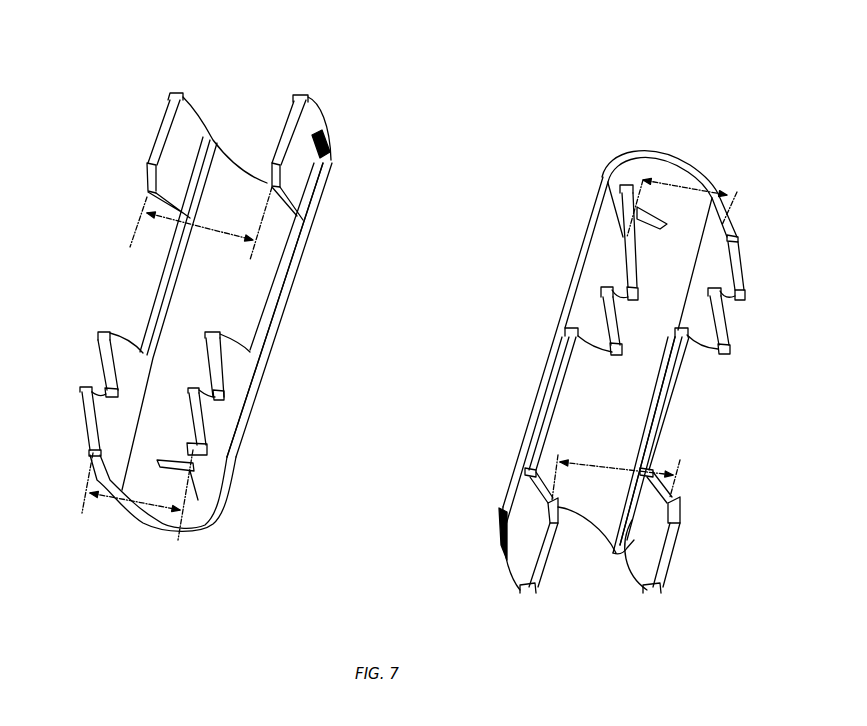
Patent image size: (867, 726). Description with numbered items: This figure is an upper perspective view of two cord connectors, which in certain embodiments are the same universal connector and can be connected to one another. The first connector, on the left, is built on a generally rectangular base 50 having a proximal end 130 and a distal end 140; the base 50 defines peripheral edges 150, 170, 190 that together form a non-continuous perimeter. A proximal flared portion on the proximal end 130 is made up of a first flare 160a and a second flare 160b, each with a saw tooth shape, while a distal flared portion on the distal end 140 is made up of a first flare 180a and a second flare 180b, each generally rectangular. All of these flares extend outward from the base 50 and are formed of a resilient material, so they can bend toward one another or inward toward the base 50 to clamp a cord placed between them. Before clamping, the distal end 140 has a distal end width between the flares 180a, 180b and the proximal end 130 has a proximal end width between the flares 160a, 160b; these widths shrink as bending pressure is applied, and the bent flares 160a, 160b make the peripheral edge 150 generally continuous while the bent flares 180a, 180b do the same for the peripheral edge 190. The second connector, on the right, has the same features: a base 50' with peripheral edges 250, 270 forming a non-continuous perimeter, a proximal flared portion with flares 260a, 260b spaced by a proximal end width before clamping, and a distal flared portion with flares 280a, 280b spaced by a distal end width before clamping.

The distal end 140 is at (300, 78).
The first flare 180a is at (150, 147).
The second flare 180b is at (297, 122).
The peripheral edge 190 is at (226, 152).
The base 50 is at (296, 310).
The peripheral edge 170 is at (281, 280).
The first flare 160a is at (97, 338).
The second flare 160b is at (220, 367).
The proximal end 130 is at (78, 424).
The peripheral edge 150 is at (170, 531).
The peripheral edge 250 is at (707, 150).
The first flare 260a is at (600, 318).
The second flare 260b is at (727, 330).
The peripheral edge 270 is at (533, 402).
The base 50' is at (665, 441).
The first flare 280a is at (545, 555).
The second flare 280b is at (667, 555).